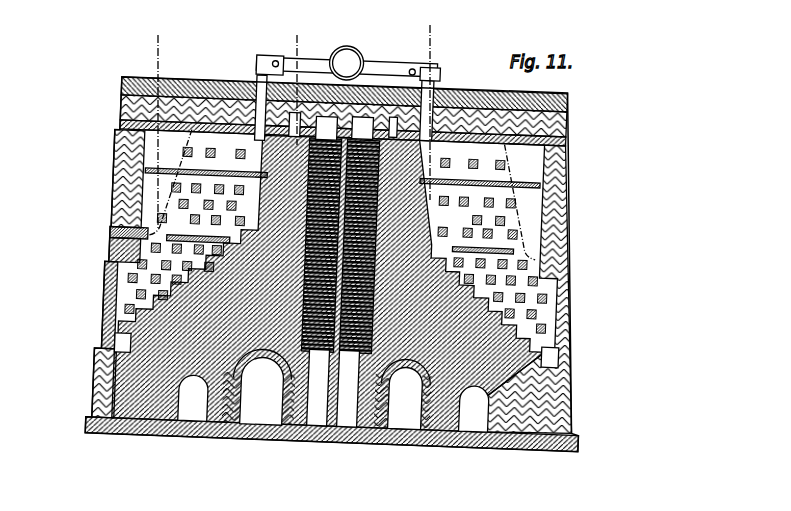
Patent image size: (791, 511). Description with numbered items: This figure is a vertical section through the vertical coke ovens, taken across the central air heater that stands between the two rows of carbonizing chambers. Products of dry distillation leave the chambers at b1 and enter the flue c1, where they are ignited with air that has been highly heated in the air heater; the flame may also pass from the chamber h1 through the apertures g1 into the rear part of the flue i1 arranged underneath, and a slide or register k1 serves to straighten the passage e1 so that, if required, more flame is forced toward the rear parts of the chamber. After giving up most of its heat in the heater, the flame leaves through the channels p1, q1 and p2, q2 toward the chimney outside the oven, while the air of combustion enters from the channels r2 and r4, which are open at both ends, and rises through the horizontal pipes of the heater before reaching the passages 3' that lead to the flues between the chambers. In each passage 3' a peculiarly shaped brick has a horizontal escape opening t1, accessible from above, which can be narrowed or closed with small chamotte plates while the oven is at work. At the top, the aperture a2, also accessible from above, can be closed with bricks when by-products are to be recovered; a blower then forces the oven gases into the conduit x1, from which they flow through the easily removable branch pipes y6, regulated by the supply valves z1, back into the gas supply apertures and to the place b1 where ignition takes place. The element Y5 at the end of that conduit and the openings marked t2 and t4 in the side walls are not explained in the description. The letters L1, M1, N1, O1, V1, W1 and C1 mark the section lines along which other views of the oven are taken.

The section line N' O' N1 is at (167, 129).
The section line L' M' L1 is at (305, 89).
The section line V' W' W1 is at (442, 112).
The pipe flange Y5 is at (275, 60).
The branch pipe y6 is at (414, 63).
The supply valve z1 is at (417, 57).
The conduit x1 is at (397, 63).
The horizontal escape opening t1 is at (440, 118).
The aperture a2 is at (435, 110).
The ignition place b1 is at (400, 133).
The passage 3' is at (328, 130).
The flue c1 is at (482, 170).
The section line C' D' C1 is at (434, 193).
The chamber h1 is at (530, 243).
The slide or register k1 is at (133, 232).
The apertures g1 is at (515, 252).
The passage e1 is at (533, 260).
The flue i1 is at (507, 303).
The side opening t2 is at (115, 340).
The side opening t4 is at (548, 360).
The section line V' W' V1 is at (545, 198).
The section line N' O' O1 is at (85, 415).
The channel r2 is at (196, 410).
The channel q1 is at (266, 395).
The section line L' M' M1 is at (264, 365).
The channel p1 is at (320, 397).
The channel p2 is at (353, 397).
The channel q2 is at (405, 400).
The channel r4 is at (475, 417).